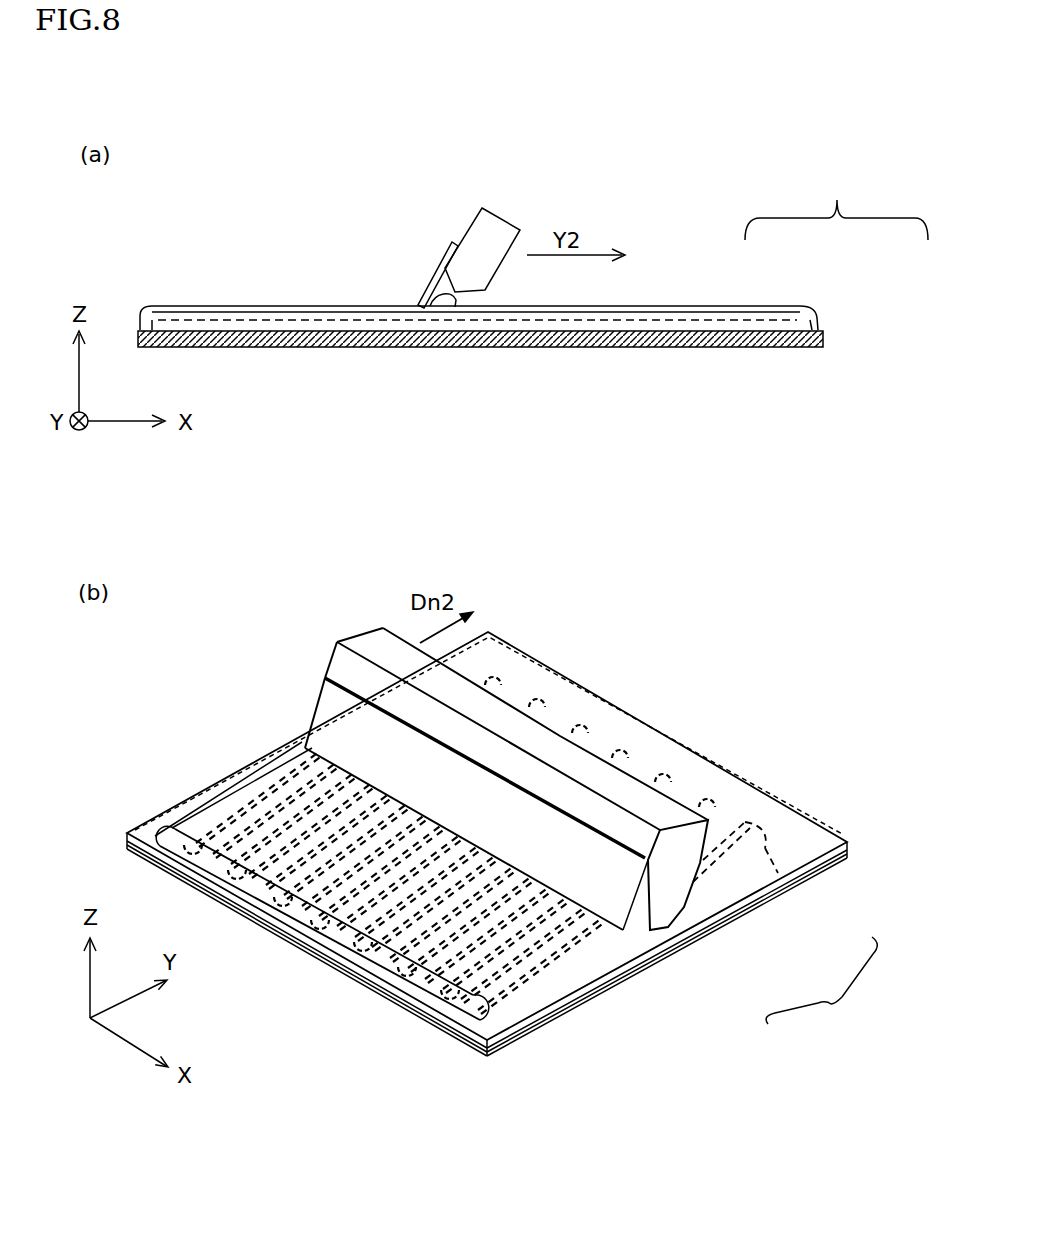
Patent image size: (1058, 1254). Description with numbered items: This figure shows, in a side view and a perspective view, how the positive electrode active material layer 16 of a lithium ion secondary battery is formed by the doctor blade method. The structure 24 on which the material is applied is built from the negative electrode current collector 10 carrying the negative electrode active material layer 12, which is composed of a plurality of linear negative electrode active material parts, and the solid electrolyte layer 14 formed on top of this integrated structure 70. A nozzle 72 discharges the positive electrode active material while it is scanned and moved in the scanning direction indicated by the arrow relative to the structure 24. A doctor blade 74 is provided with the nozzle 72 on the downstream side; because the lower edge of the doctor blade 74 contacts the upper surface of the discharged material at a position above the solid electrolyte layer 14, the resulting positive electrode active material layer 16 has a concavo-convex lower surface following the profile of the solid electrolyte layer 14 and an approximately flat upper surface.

The negative electrode current collector 10 is at (822, 340).
The negative electrode active material layer 12 is at (790, 317).
The solid electrolyte layer 14 is at (705, 313).
The positive electrode active material layer 16 is at (333, 305).
The structure 24 is at (836, 204).
The integrated structure 70 is at (821, 990).
The nozzle 72 is at (507, 220).
The doctor blade 74 is at (432, 273).